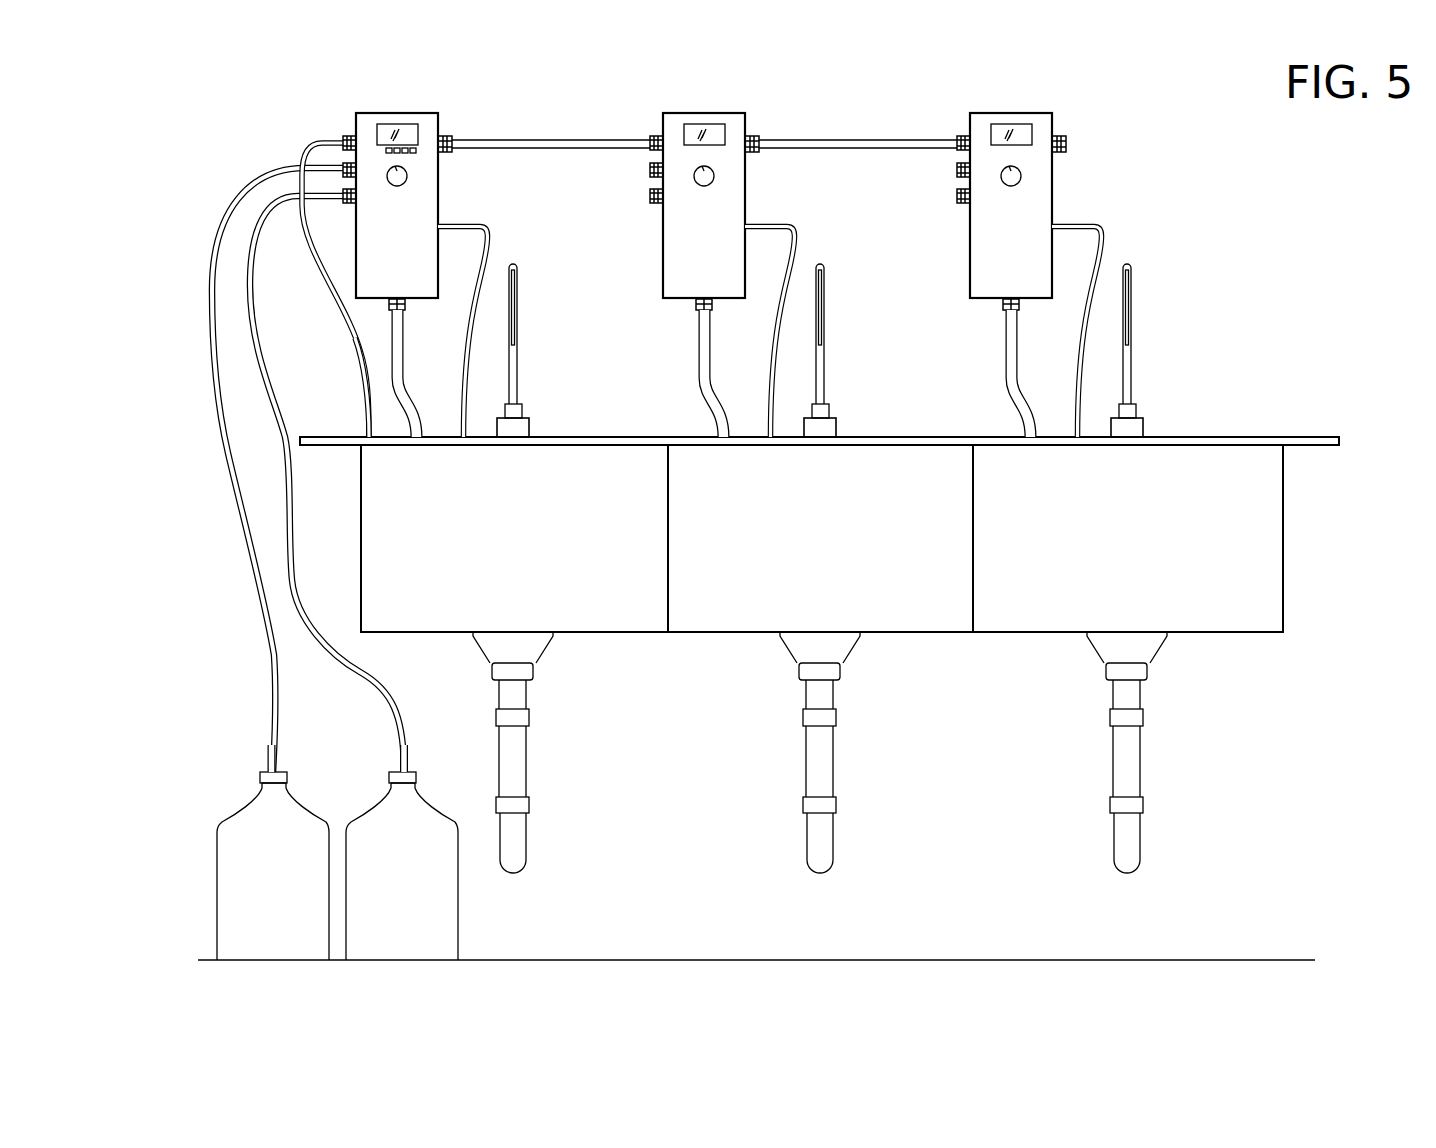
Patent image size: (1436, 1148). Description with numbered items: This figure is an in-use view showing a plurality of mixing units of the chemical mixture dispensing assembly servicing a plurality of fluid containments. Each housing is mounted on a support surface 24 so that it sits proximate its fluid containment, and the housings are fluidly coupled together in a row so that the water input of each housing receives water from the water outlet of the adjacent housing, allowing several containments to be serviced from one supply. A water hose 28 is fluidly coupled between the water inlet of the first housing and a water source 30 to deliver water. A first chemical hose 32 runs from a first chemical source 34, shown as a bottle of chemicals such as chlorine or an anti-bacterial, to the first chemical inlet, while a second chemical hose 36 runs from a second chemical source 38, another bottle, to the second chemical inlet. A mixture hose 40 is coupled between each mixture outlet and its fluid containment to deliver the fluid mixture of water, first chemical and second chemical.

The support surface 24 is at (943, 110).
The water hose 28 is at (323, 139).
The water source 30 is at (364, 434).
The first chemical hose 32 is at (250, 183).
The first chemical source 34 is at (225, 827).
The second chemical hose 36 is at (290, 480).
The second chemical source 38 is at (363, 818).
The mixture hose 40 is at (400, 385).